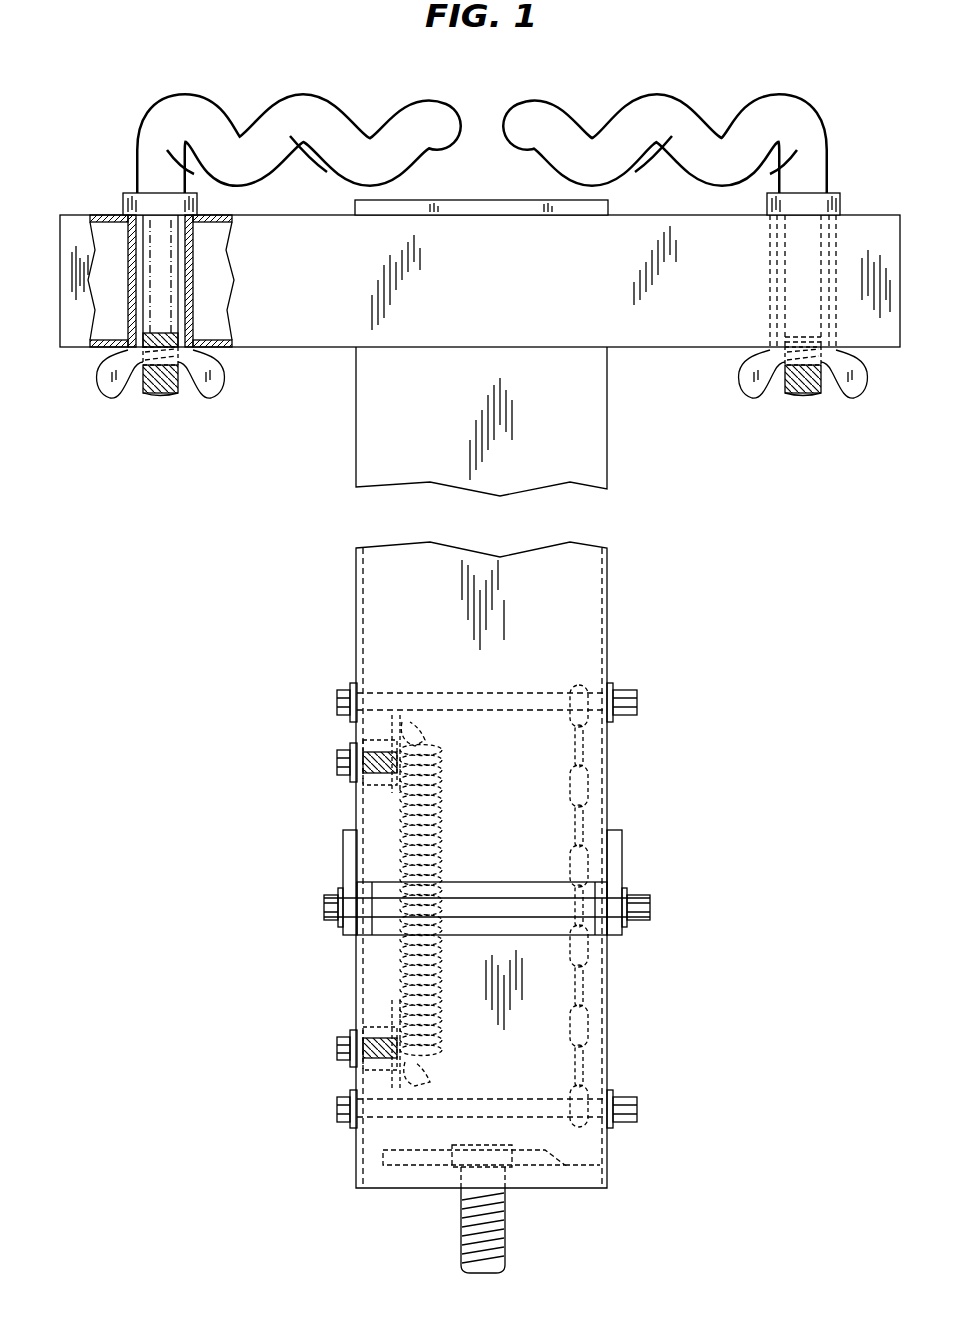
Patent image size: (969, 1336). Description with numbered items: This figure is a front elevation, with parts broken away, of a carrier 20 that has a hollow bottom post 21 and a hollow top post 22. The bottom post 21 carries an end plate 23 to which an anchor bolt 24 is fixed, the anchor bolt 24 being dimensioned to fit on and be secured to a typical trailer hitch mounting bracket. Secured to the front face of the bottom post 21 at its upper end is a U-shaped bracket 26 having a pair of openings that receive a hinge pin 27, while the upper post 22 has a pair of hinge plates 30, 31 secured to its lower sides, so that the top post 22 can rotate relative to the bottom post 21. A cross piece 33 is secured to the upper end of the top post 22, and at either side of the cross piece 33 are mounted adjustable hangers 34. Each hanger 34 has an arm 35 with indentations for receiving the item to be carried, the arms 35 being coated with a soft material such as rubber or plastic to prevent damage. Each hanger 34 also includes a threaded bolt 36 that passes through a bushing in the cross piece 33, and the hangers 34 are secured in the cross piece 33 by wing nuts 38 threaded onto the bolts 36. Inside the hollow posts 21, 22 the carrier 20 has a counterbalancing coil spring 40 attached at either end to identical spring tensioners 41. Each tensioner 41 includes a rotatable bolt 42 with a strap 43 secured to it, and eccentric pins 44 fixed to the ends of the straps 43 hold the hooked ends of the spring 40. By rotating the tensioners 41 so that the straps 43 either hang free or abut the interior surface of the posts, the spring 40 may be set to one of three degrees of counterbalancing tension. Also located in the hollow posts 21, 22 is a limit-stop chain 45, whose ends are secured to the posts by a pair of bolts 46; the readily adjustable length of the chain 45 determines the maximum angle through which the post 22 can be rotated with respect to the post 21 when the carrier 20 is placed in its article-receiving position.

The carrier 20 is at (111, 118).
The adjustable hanger 34 is at (324, 106).
The arm 35 is at (326, 164).
The cross piece 33 is at (265, 337).
The threaded bolt 36 is at (153, 395).
The wing nut 38 is at (122, 376).
The hollow top post 22 is at (383, 565).
The hollow bottom post 21 is at (555, 993).
The bolt 46 is at (337, 703).
The spring tensioner 41 is at (337, 765).
The rotatable bolt 42 is at (350, 785).
The strap 43 is at (405, 712).
The eccentric pin 44 is at (425, 728).
The coil spring 40 is at (400, 932).
The limit-stop chain 45 is at (598, 757).
The hinge plate 30 is at (343, 848).
The hinge plate 31 is at (615, 855).
The hinge pin 27 is at (500, 905).
The U-shaped bracket 26 is at (383, 920).
The end plate 23 is at (608, 1177).
The anchor bolt 24 is at (500, 1218).